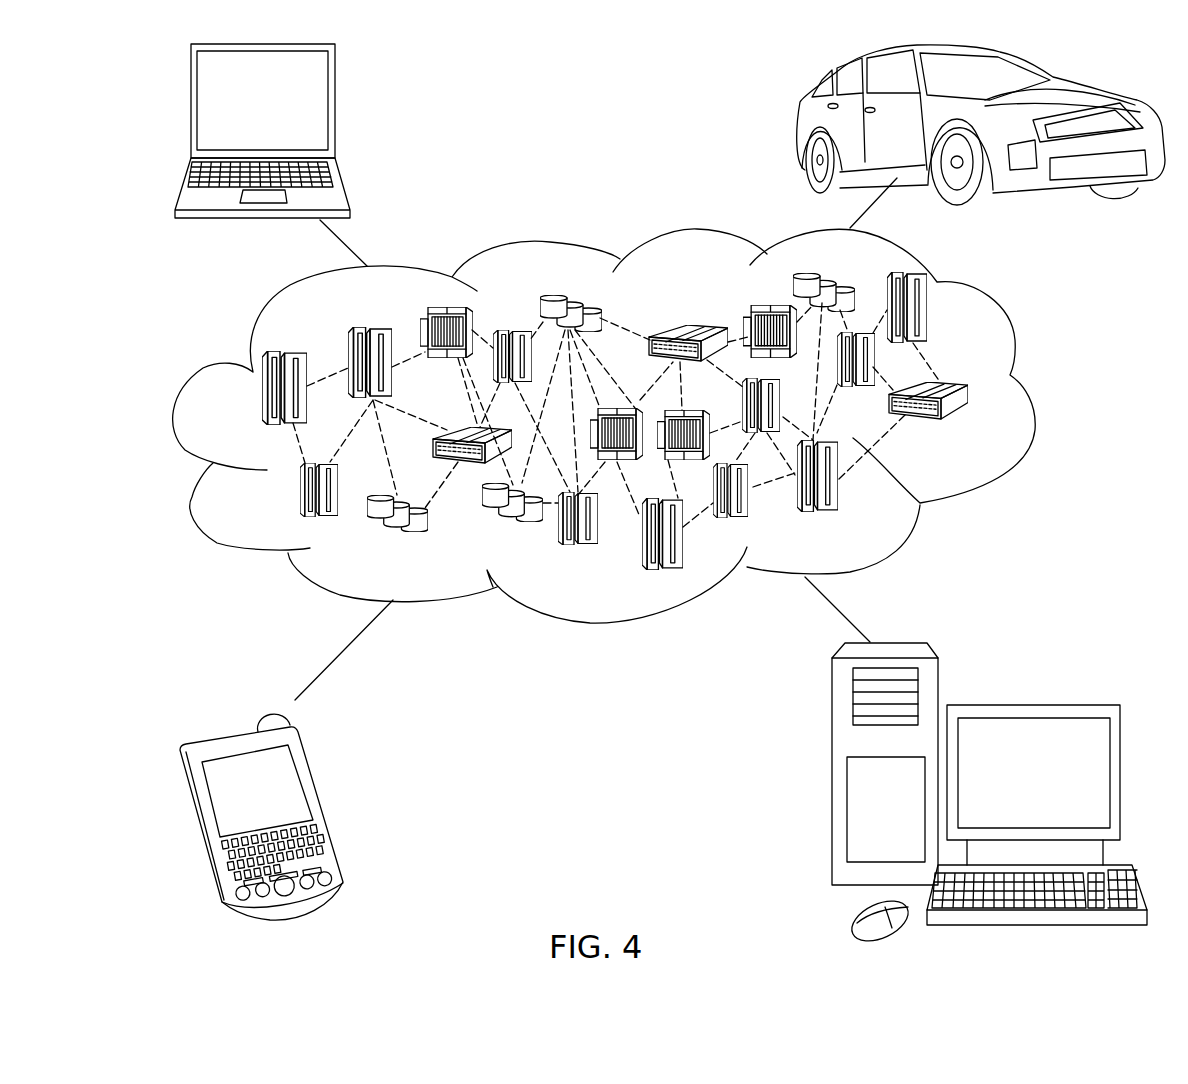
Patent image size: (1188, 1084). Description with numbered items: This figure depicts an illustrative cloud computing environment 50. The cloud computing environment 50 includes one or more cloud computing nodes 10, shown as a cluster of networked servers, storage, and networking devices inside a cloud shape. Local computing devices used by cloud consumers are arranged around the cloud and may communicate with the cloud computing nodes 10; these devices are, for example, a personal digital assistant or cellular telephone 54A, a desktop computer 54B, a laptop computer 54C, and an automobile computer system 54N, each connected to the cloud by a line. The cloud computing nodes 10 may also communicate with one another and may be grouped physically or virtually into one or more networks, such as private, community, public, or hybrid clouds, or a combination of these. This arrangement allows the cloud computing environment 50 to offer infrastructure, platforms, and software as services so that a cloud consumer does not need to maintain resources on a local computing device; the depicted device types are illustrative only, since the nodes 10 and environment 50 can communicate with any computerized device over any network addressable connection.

The cloud computing node 10 is at (980, 433).
The cloud computing environment 50 is at (634, 439).
The personal digital assistant (PDA) or cellular telephone 54A is at (325, 803).
The desktop computer 54B is at (1031, 705).
The laptop computer 54C is at (335, 109).
The automobile computer system 54N is at (800, 124).